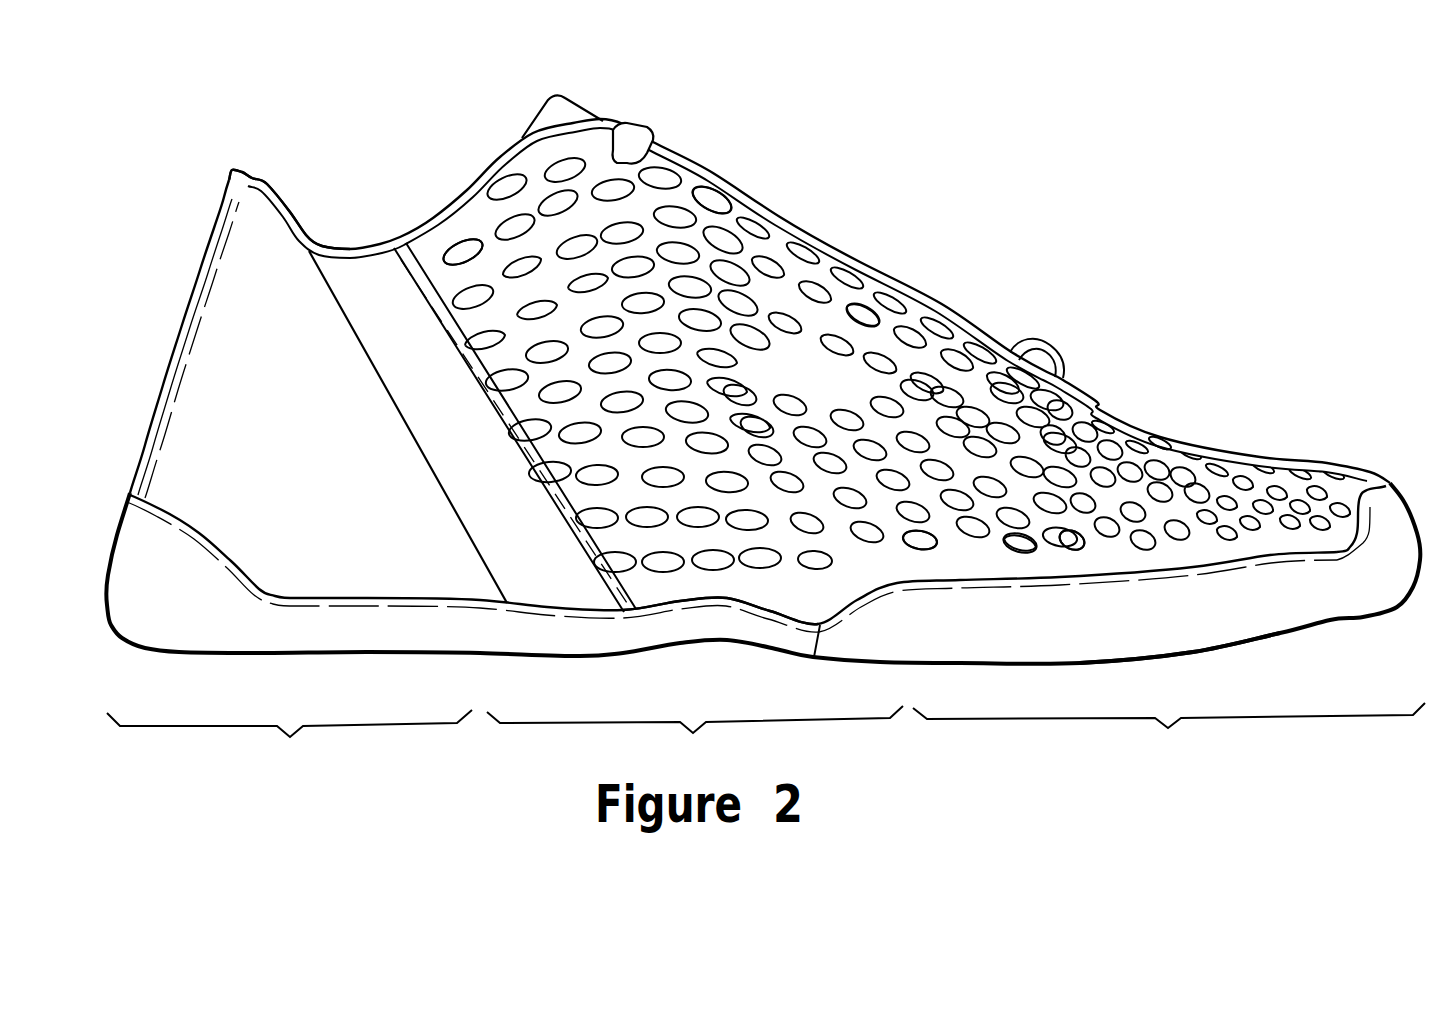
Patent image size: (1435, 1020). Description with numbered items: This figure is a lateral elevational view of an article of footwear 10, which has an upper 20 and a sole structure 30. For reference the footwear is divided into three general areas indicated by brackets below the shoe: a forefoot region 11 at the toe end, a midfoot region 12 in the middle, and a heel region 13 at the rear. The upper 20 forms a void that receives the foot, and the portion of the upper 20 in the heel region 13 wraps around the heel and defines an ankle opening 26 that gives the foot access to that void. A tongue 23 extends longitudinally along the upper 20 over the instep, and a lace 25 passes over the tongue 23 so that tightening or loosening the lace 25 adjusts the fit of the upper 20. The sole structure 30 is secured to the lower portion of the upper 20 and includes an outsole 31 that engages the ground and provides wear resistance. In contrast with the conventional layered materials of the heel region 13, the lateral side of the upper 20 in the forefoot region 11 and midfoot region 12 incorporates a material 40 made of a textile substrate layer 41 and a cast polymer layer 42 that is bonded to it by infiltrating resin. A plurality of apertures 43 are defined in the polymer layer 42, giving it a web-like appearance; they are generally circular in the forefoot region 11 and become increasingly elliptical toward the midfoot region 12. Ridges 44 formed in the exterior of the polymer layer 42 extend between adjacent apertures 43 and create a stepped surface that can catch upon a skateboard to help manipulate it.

The article of footwear 10 is at (1100, 231).
The forefoot region 11 is at (1169, 734).
The midfoot region 12 is at (695, 737).
The heel region 13 is at (289, 741).
The upper 20 is at (945, 298).
The tongue 23 is at (558, 95).
The lace 25 is at (648, 122).
The ankle opening 26 is at (280, 186).
The sole structure 30 is at (1298, 639).
The outsole 31 is at (1193, 653).
The material 40 is at (1378, 466).
The substrate layer 41 is at (458, 256).
The polymer layer 42 is at (480, 203).
The apertures 43 is at (441, 237).
The ridges 44 is at (1160, 447).